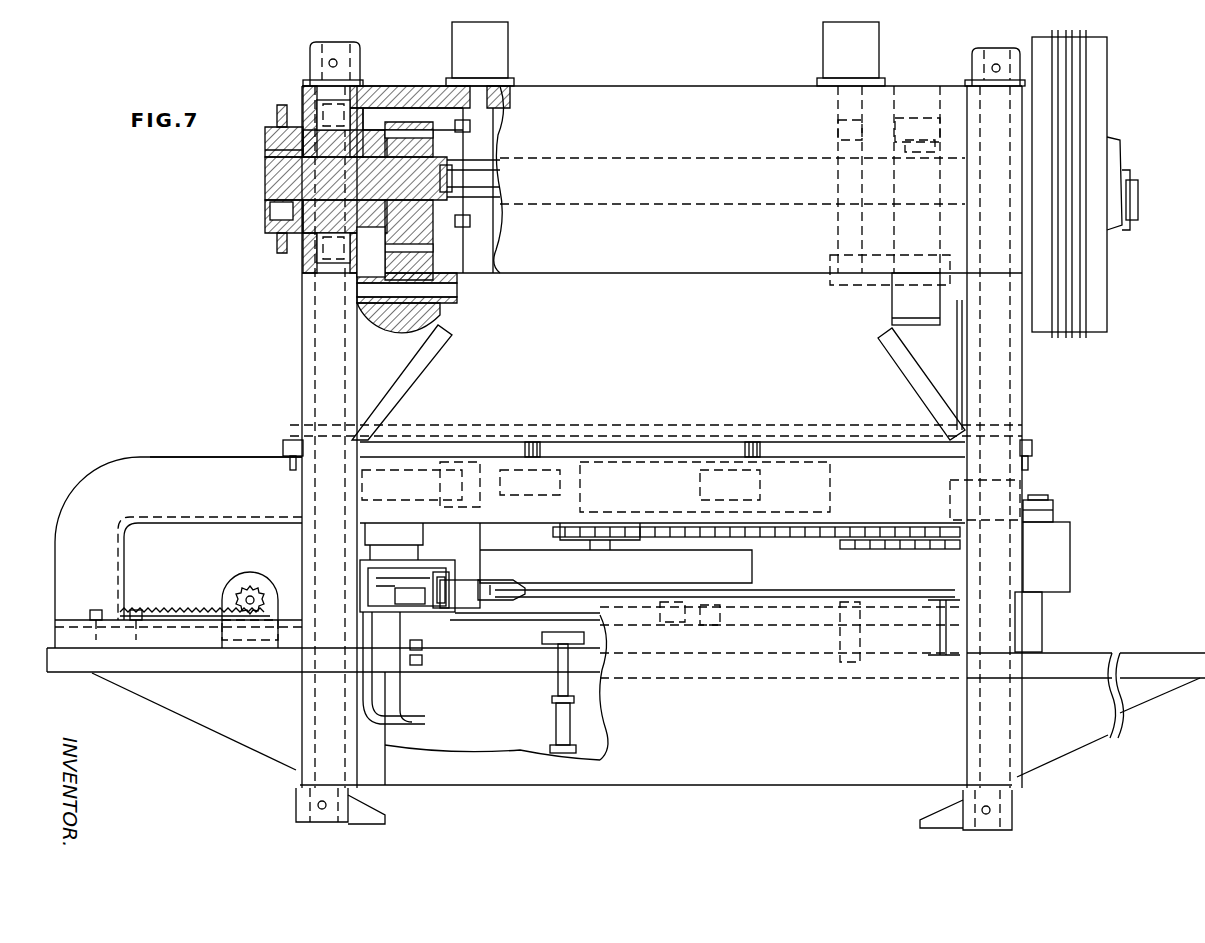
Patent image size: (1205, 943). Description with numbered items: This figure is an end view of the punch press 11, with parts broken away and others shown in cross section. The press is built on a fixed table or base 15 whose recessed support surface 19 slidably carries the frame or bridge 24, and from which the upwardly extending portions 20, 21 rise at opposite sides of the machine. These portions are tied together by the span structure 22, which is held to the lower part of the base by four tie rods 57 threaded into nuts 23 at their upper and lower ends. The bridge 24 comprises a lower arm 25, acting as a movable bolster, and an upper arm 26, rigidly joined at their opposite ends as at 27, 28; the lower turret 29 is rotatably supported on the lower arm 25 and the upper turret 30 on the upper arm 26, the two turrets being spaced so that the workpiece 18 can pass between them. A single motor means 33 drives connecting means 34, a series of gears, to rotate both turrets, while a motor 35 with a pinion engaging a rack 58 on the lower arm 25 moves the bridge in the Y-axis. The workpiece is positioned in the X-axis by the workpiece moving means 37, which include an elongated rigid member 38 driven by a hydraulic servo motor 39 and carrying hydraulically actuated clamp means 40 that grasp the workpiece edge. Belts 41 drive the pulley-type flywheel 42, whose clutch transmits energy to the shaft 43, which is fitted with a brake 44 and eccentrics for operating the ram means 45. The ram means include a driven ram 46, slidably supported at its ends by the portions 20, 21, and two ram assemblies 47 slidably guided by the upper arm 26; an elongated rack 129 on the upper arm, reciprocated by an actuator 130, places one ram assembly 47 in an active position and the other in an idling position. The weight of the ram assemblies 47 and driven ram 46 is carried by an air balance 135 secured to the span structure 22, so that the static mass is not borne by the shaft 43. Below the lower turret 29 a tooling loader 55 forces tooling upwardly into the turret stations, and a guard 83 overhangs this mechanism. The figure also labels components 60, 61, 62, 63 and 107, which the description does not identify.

The punch press 11 is at (184, 379).
The fixed table or base 15 is at (225, 738).
The workpiece 18 is at (930, 600).
The support surface 19 is at (140, 652).
The upwardly extending portion 20 is at (302, 345).
The upwardly extending portion 21 is at (1005, 372).
The span structure 22 is at (645, 86).
The nuts 23 is at (322, 58).
The frame or bridge 24 is at (48, 552).
The lower arm 25 is at (190, 625).
The upper arm 26 is at (192, 470).
The joined end 27 is at (126, 560).
The joined end 28 is at (1035, 608).
The lower turret 29 is at (500, 612).
The upper turret 30 is at (740, 568).
The motor means 33 is at (1062, 556).
The connecting means 34 is at (866, 560).
The motor 35 is at (255, 585).
The workpiece moving means 37 is at (436, 563).
The elongated rigid member 38 is at (395, 600).
The motor 39 is at (418, 540).
The clamp means 40 is at (470, 600).
The belts 41 is at (1055, 80).
The pulley-type flywheel 42 is at (1095, 275).
The shaft 43 is at (452, 205).
The brake 44 is at (268, 132).
The ram means 45 is at (683, 292).
The driven ram 46 is at (664, 357).
The ram assembly 47 is at (535, 442).
The tooling loader 55 is at (556, 727).
The tie rods 57 is at (330, 108).
The rack 58 is at (170, 608).
The hub 60 is at (1118, 150).
The gear 61 is at (426, 140).
The chain 62 is at (805, 538).
The plate 63 is at (878, 600).
The guard 83 is at (478, 572).
The cylinder 107 is at (448, 470).
The elongated rack 129 is at (575, 475).
The actuator 130 is at (410, 470).
The air balance 135 is at (452, 50).